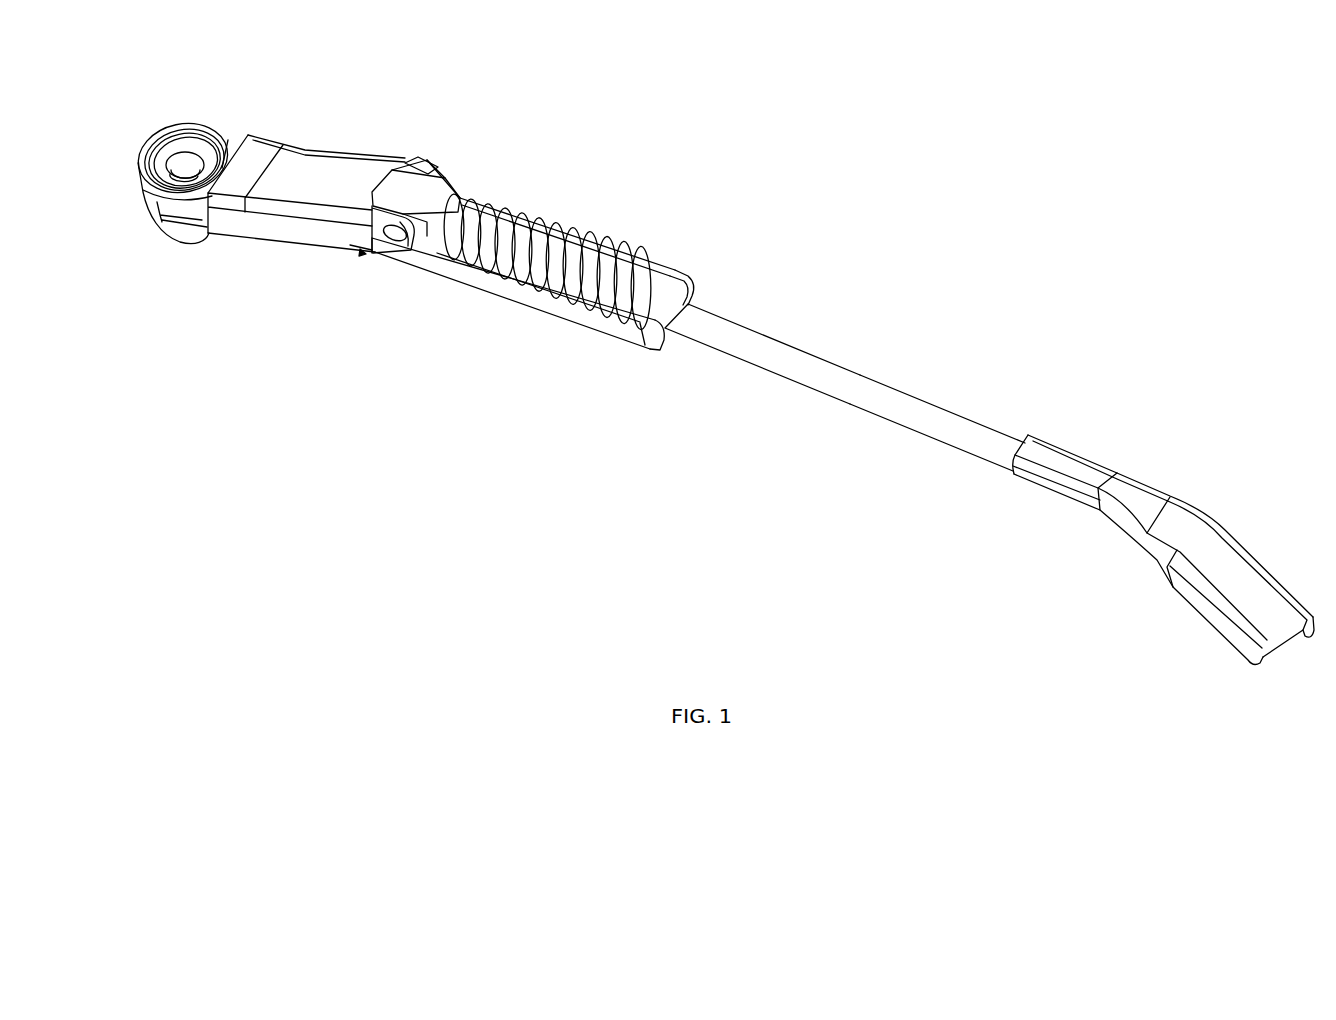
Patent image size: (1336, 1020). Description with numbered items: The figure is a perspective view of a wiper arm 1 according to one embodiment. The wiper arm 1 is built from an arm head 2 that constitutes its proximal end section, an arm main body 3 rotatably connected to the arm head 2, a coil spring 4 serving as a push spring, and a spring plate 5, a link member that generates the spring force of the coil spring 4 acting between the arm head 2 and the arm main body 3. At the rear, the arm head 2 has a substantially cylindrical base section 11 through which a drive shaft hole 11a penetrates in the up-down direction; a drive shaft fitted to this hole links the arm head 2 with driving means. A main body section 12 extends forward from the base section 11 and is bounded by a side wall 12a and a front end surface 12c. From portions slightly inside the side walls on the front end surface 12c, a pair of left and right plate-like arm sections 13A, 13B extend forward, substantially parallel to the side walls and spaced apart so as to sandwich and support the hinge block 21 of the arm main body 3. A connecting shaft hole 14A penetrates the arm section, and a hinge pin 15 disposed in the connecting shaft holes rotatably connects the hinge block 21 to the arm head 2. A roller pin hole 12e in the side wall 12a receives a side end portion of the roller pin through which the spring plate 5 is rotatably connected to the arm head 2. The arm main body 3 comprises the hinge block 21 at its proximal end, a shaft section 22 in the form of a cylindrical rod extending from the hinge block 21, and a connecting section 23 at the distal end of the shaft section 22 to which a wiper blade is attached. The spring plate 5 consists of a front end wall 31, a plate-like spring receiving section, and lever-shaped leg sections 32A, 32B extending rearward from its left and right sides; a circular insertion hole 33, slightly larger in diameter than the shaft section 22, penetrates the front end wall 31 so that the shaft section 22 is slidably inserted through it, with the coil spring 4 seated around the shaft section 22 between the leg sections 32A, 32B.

The wiper arm 1 is at (750, 163).
The base section 11 is at (142, 210).
The drive shaft hole 11a is at (184, 160).
The arm head 2 is at (290, 148).
The main body section 12 is at (335, 172).
The side wall 12a is at (270, 222).
The front end surface 12c is at (402, 170).
The roller pin hole 12e is at (360, 254).
The arm section 13A is at (427, 255).
The arm section 13B is at (453, 183).
The connecting shaft hole 14A is at (350, 245).
The hinge pin 15 is at (388, 240).
The hinge block 21 is at (436, 197).
The shaft section 22 is at (775, 340).
The connecting section 23 is at (1210, 512).
The arm main body 3 is at (904, 394).
The front end wall 31 is at (662, 345).
The leg section 32A is at (495, 293).
The leg section 32B is at (601, 237).
The insertion hole 33 is at (692, 287).
The coil spring 4 is at (567, 240).
The spring plate 5 is at (583, 316).